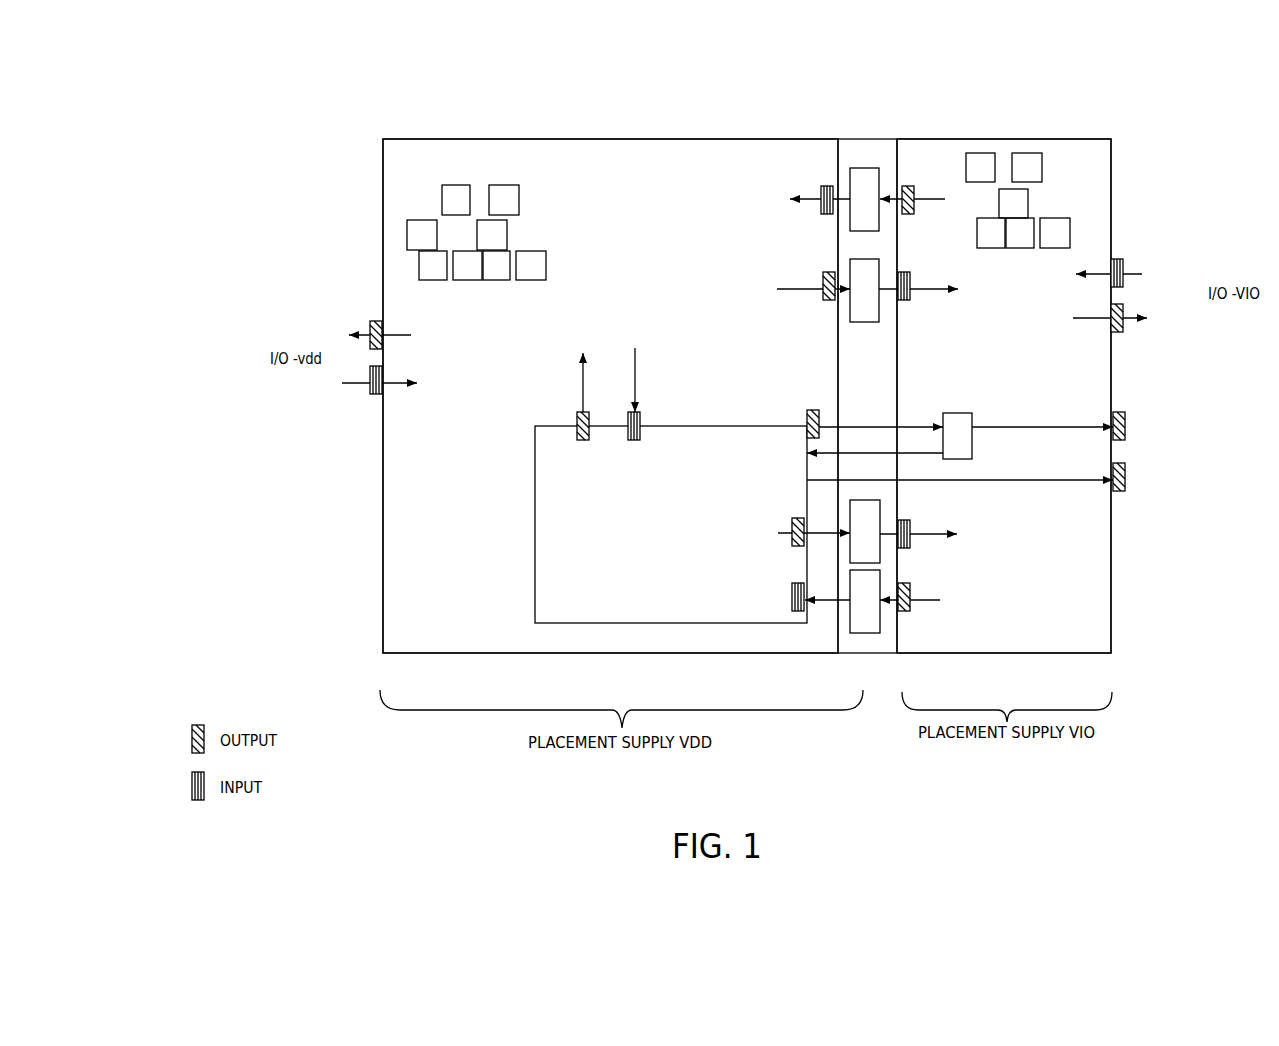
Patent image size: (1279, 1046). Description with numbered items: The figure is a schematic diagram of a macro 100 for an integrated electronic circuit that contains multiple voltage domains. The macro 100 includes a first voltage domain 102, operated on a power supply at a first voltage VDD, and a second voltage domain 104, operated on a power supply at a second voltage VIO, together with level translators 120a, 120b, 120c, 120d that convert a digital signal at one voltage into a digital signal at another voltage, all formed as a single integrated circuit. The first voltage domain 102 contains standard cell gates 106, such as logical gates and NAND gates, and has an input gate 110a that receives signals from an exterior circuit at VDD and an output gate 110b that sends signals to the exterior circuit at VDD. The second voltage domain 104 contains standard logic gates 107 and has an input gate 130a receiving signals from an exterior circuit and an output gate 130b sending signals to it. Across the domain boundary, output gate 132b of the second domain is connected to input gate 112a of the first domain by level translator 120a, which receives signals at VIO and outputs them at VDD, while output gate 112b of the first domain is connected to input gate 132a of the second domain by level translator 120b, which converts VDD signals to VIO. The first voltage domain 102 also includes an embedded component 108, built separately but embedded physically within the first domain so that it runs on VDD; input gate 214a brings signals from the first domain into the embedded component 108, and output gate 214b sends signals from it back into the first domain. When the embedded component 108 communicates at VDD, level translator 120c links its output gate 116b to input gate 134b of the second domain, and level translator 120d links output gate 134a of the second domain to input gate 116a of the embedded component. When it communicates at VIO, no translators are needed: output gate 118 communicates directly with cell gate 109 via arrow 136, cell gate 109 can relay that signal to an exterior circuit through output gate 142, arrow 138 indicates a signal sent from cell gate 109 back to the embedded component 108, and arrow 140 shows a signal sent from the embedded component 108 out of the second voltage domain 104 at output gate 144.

The macro 100 is at (320, 147).
The first voltage domain 102 is at (507, 139).
The second voltage domain 104 is at (988, 139).
The standard cell gates 106 is at (410, 199).
The standard logic gates 107 is at (1111, 319).
The embedded component 108 is at (535, 490).
The cell gate 109 is at (957, 413).
The input gate 110a is at (370, 389).
The output gate 110b is at (370, 326).
The input gate 112a is at (821, 192).
The output gate 112b is at (823, 282).
The input gate 116a is at (792, 600).
The output gate 116b is at (792, 528).
The output gate 118 is at (807, 417).
The level translator 120a is at (870, 168).
The level translator 120b is at (875, 322).
The level translator 120c is at (880, 515).
The level translator 120d is at (880, 623).
The input gate 130a is at (1123, 266).
The output gate 130b is at (1123, 311).
The input gate 132a is at (909, 284).
The output gate 132b is at (913, 207).
The output gate 134a is at (908, 593).
The input gate 134b is at (908, 530).
The arrow 136 is at (850, 426).
The arrow 138 is at (903, 452).
The arrow 140 is at (1010, 479).
The output gate 142 is at (1125, 426).
The output gate 144 is at (1125, 477).
The input gate 214a is at (637, 440).
The output gate 214b is at (583, 440).